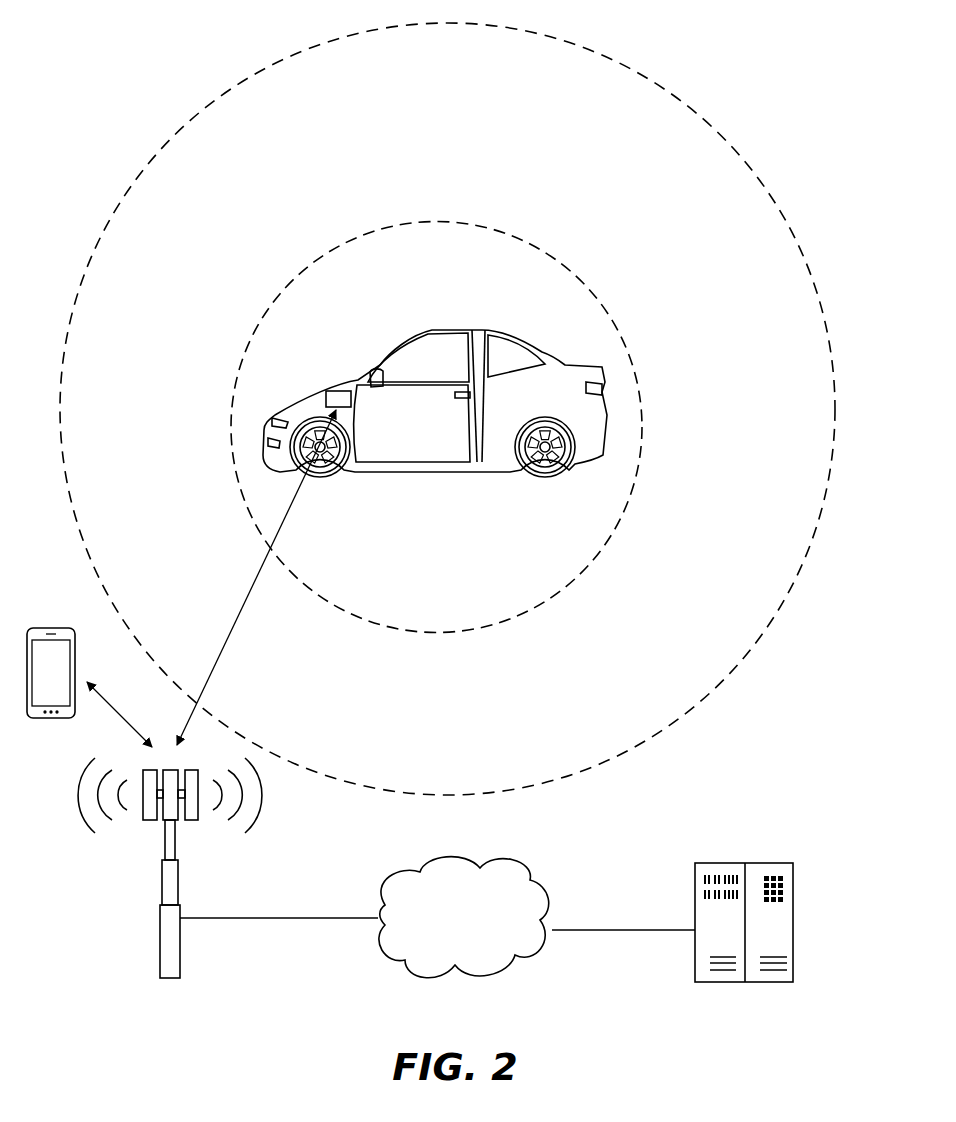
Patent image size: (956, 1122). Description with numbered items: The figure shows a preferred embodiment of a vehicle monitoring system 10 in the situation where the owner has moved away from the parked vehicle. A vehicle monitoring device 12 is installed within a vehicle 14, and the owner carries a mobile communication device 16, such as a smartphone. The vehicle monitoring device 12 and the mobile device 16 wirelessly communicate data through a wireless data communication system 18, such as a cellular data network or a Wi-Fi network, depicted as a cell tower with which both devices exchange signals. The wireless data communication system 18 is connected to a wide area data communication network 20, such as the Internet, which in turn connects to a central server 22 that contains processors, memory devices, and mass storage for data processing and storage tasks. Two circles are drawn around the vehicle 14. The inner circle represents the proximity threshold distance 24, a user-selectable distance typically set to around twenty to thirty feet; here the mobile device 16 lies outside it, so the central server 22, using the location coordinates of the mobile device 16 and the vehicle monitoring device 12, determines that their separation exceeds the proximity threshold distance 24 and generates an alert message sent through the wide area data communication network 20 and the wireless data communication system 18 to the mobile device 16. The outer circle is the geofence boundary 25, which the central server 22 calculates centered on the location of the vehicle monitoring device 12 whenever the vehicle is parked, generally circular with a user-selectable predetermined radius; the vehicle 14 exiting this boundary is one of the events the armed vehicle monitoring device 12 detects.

The vehicle monitoring system 10 is at (110, 92).
The vehicle monitoring device 12 is at (332, 389).
The vehicle 14 is at (478, 331).
The mobile communication device 16 is at (57, 627).
The wireless data communication system 18 is at (178, 892).
The wide area data communication network 20 is at (522, 865).
The central server 22 is at (766, 862).
The proximity threshold distance 24 is at (542, 603).
The geofence boundary 25 is at (722, 683).